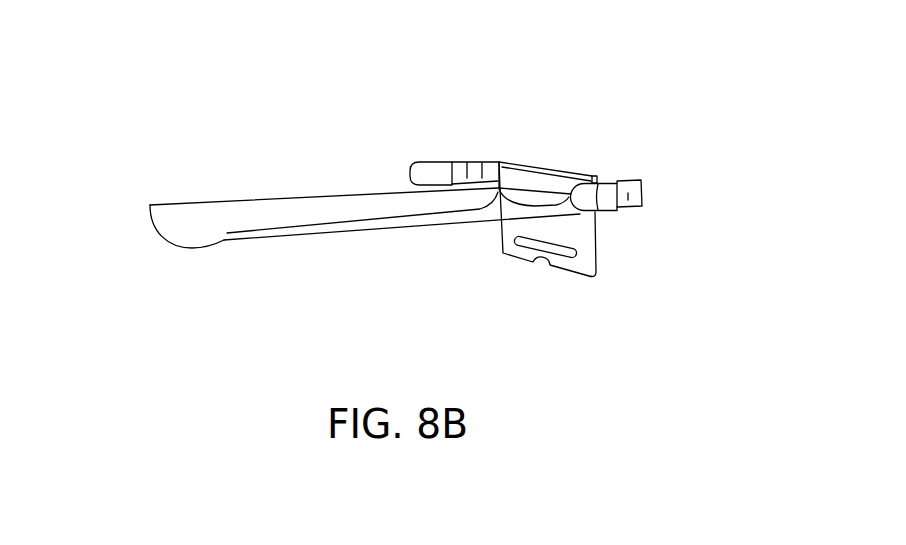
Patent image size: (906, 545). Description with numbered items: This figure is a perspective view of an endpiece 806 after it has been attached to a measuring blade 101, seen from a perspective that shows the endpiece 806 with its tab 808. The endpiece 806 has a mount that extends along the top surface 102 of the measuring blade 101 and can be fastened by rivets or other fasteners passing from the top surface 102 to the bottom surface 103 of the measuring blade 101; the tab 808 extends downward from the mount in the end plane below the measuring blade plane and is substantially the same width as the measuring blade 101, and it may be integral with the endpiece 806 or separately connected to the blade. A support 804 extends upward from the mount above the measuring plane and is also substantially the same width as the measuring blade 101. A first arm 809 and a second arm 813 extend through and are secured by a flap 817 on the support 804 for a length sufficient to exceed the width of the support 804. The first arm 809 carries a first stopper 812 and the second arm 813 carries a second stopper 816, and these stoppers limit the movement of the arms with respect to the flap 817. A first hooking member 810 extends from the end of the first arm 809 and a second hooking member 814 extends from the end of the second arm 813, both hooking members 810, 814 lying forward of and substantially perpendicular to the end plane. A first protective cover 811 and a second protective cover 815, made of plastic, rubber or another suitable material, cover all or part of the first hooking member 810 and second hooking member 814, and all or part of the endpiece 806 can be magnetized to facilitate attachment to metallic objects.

The measuring blade 101 is at (156, 230).
The top surface 102 is at (222, 213).
The bottom surface 103 is at (275, 241).
The support 804 is at (545, 172).
The endpiece 806 is at (603, 300).
The tab 808 is at (510, 252).
The first arm 809 is at (481, 165).
The first hooking member 810 is at (460, 163).
The first protective cover 811 is at (429, 164).
The first stopper 812 is at (492, 165).
The second arm 813 is at (609, 175).
The second hooking member 814 is at (622, 208).
The second protective cover 815 is at (600, 198).
The second stopper 816 is at (627, 178).
The flap 817 is at (521, 167).